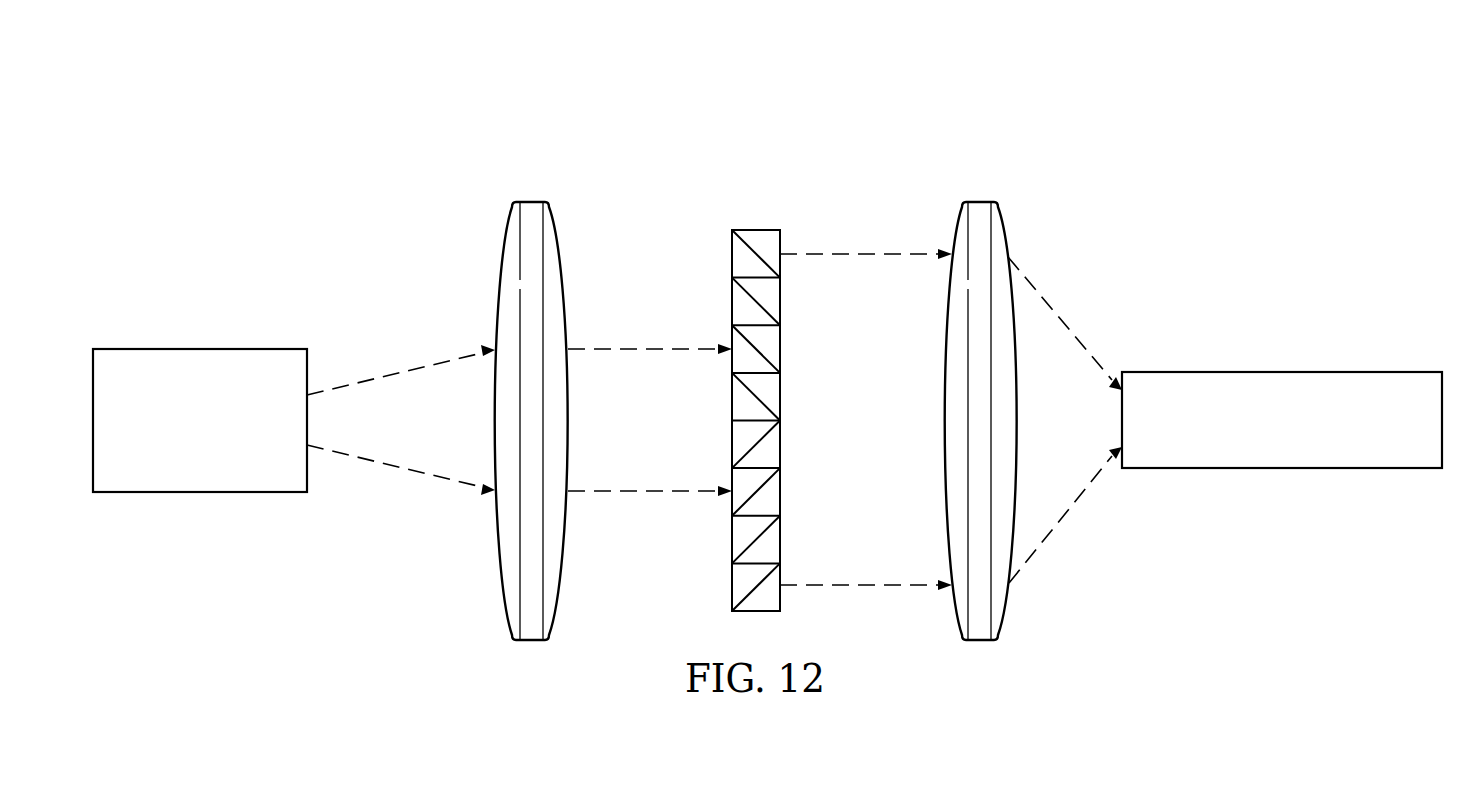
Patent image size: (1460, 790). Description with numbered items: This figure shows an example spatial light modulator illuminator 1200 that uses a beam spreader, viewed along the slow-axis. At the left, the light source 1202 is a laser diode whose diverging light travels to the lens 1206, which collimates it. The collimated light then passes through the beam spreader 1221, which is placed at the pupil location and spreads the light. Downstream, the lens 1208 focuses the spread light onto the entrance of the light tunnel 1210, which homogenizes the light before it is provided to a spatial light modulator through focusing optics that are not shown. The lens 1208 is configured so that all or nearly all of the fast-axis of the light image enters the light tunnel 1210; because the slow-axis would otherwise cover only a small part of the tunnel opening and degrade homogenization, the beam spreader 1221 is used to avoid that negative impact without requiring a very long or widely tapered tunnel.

The spatial light modulator illuminator 1200 is at (580, 108).
The light source 1202 is at (170, 437).
The lens 1206 is at (533, 202).
The beam spreader 1221 is at (754, 230).
The lens 1208 is at (980, 202).
The light tunnel 1210 is at (1252, 436).